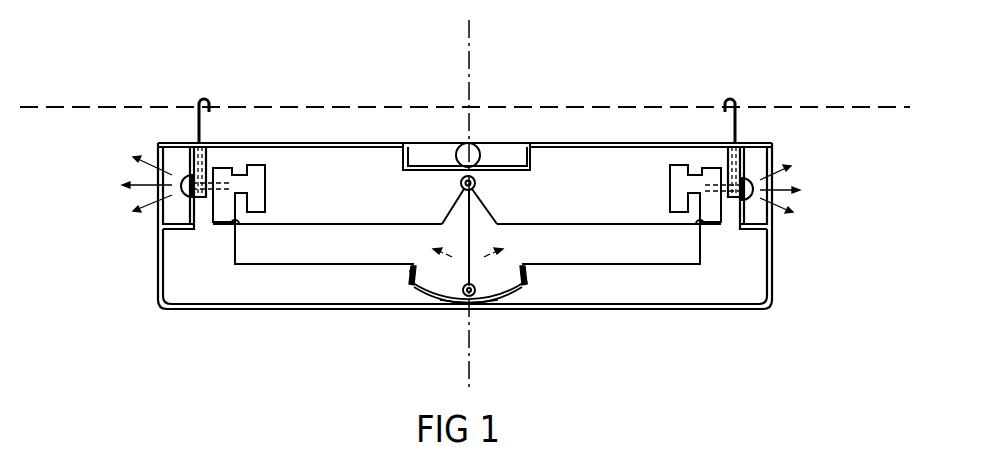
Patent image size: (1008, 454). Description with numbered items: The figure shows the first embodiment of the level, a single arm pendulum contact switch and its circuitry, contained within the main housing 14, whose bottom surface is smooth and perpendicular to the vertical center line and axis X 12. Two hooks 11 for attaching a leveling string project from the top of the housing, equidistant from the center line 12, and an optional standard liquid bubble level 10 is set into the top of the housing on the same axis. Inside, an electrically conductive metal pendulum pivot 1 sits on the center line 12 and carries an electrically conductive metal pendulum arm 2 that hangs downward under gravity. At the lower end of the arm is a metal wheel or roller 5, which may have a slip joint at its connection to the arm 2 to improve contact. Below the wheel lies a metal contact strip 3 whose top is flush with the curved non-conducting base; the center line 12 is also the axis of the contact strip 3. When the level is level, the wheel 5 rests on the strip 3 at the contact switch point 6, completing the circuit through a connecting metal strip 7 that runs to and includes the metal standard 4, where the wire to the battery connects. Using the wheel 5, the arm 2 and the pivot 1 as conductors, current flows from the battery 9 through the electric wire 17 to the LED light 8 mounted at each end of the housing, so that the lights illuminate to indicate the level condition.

The pendulum pivot 1 is at (472, 178).
The pendulum arm 2 is at (476, 232).
The metal contact strip 3 is at (493, 309).
The metal standard 4 is at (407, 268).
The metal wheel 5 is at (410, 280).
The contact switch 6 is at (447, 306).
The metal strip 7 is at (525, 278).
The led light 8 is at (185, 177).
The battery 9 is at (248, 163).
The liquid bubble level 10 is at (458, 142).
The hooks 11 is at (200, 100).
The center line and axis X 12 is at (476, 55).
The main housing 14 is at (158, 250).
The electric wire to lights 17 is at (529, 107).